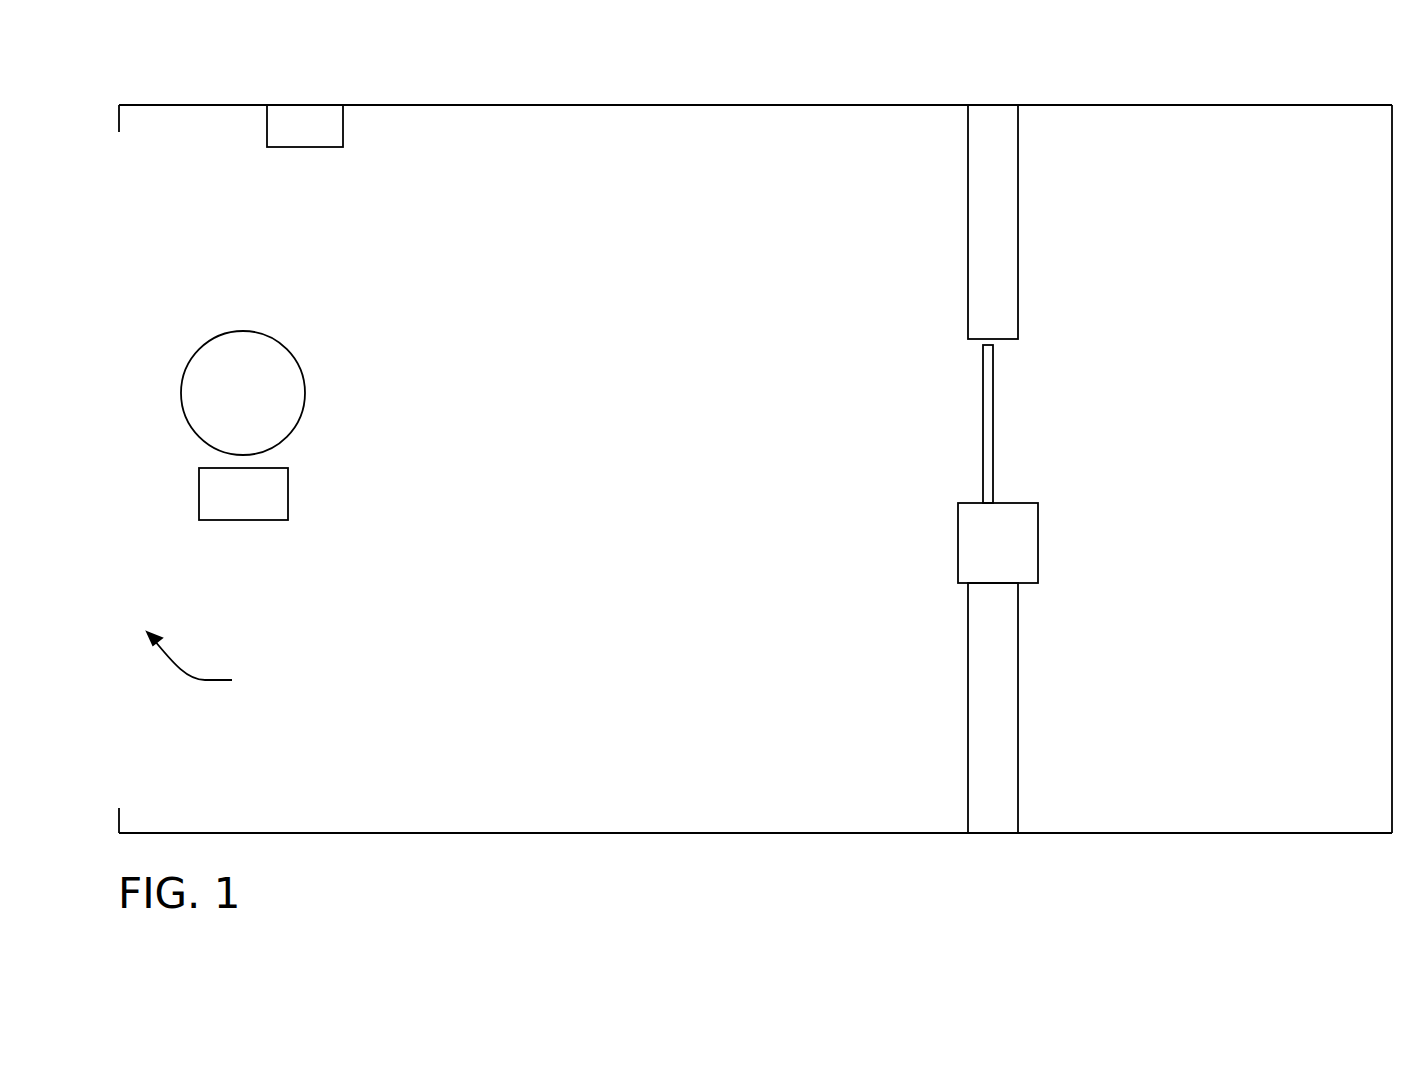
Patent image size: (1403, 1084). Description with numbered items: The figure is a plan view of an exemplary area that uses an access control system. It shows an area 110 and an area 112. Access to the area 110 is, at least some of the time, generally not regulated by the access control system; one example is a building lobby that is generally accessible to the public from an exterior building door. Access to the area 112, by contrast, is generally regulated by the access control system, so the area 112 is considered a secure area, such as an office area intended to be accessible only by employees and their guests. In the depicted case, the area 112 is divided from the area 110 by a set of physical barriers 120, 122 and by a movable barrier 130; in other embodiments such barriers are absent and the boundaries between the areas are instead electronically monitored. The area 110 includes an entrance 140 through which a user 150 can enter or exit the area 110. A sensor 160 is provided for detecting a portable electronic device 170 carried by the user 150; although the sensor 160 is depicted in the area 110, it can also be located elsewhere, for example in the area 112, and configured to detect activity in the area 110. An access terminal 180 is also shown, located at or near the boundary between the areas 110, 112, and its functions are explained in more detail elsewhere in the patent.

The area 110 is at (190, 469).
The area 112 is at (1311, 469).
The physical barrier 120 is at (1018, 205).
The physical barrier 122 is at (1018, 690).
The movable barrier 130 is at (993, 420).
The entrance 140 is at (244, 667).
The user 150 is at (243, 393).
The sensor 160 is at (315, 147).
The portable electronic device 170 is at (266, 520).
The access terminal 180 is at (1038, 545).